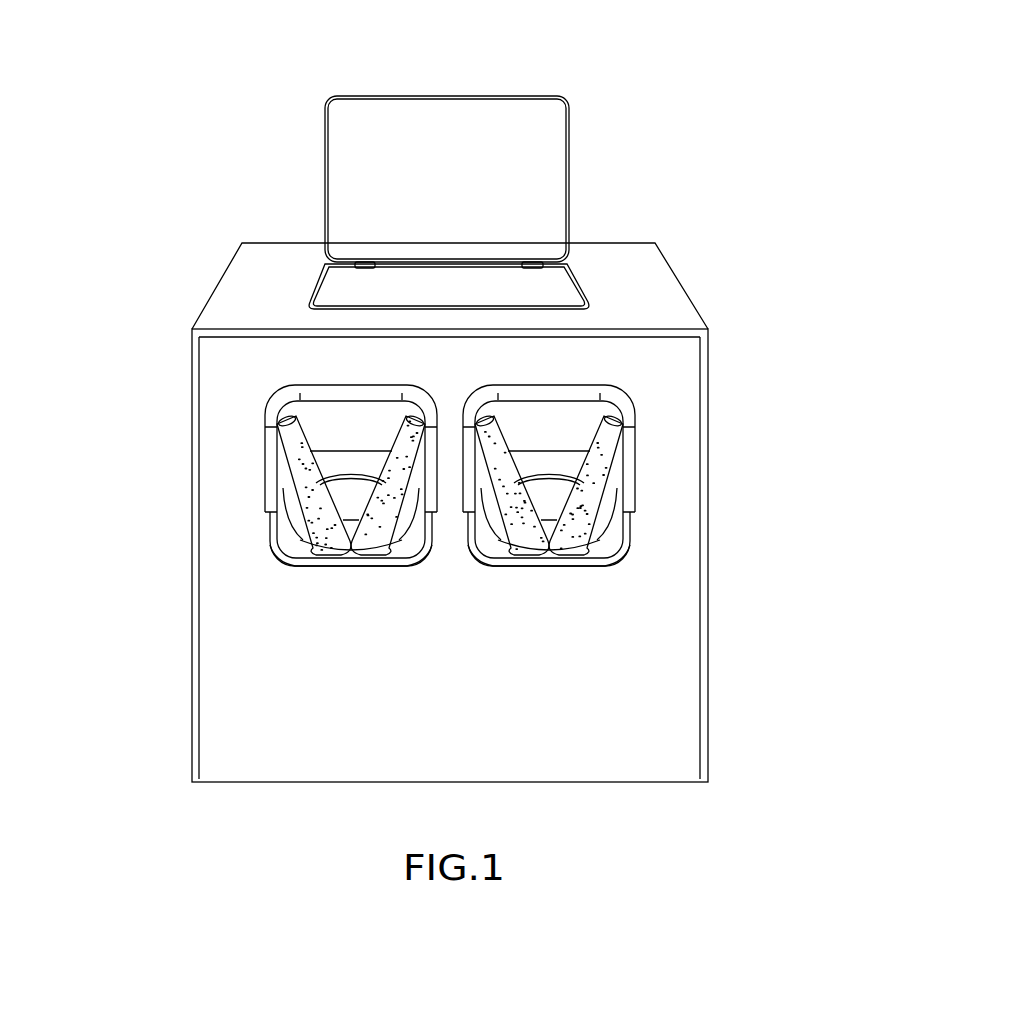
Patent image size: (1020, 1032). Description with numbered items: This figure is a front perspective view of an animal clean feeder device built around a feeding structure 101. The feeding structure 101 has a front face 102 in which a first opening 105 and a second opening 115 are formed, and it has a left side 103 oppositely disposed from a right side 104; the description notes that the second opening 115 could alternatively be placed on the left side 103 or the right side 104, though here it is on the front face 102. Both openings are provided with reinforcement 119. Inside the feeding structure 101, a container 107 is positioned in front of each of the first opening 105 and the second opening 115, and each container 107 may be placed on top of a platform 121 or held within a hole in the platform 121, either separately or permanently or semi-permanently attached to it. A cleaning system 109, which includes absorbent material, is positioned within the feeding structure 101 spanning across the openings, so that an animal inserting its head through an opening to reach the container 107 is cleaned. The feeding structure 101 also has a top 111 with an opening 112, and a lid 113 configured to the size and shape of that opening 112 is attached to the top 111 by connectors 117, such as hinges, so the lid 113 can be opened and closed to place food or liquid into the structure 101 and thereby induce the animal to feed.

The feeding structure 101 is at (442, 546).
The front face 102 is at (252, 764).
The left side 103 is at (728, 432).
The right side 104 is at (180, 437).
The first opening 105 is at (256, 383).
The container 107 is at (345, 495).
The cleaning system 109 is at (510, 536).
The top 111 is at (648, 290).
The opening 112 is at (552, 293).
The lid 113 is at (542, 152).
The second opening 115 is at (641, 384).
The connectors 117 is at (565, 262).
The reinforcement 119 is at (335, 392).
The platform 121 is at (610, 540).